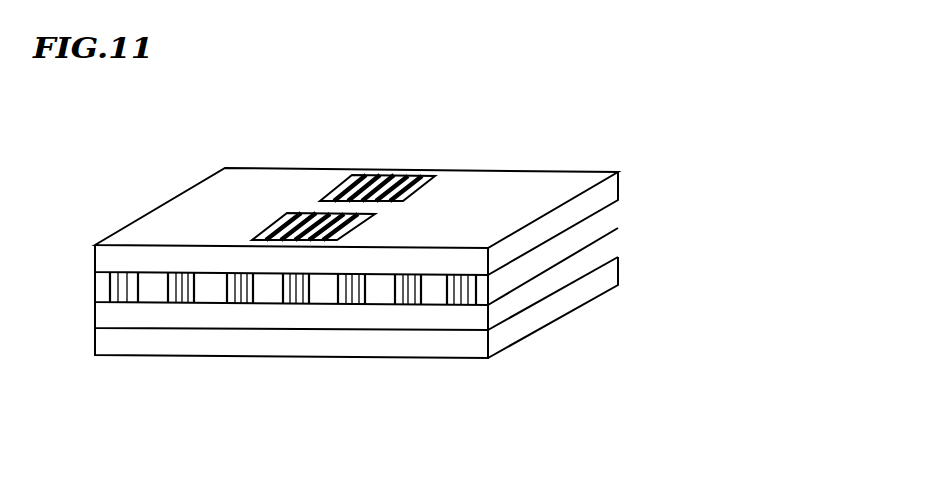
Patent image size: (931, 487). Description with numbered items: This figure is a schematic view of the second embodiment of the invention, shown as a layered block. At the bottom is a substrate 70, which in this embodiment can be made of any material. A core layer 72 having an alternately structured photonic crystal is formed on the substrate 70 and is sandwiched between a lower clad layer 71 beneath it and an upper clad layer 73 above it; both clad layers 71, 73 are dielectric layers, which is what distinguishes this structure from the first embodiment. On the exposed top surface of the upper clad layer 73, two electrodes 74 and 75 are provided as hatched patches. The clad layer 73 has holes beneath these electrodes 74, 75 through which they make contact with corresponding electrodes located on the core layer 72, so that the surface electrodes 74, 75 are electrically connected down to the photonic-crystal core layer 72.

The substrate 70 is at (577, 293).
The lower clad layer 71 is at (582, 260).
The core layer 72 is at (597, 226).
The upper clad layer 73 is at (607, 195).
The electrode 74 is at (397, 175).
The electrode 75 is at (288, 213).